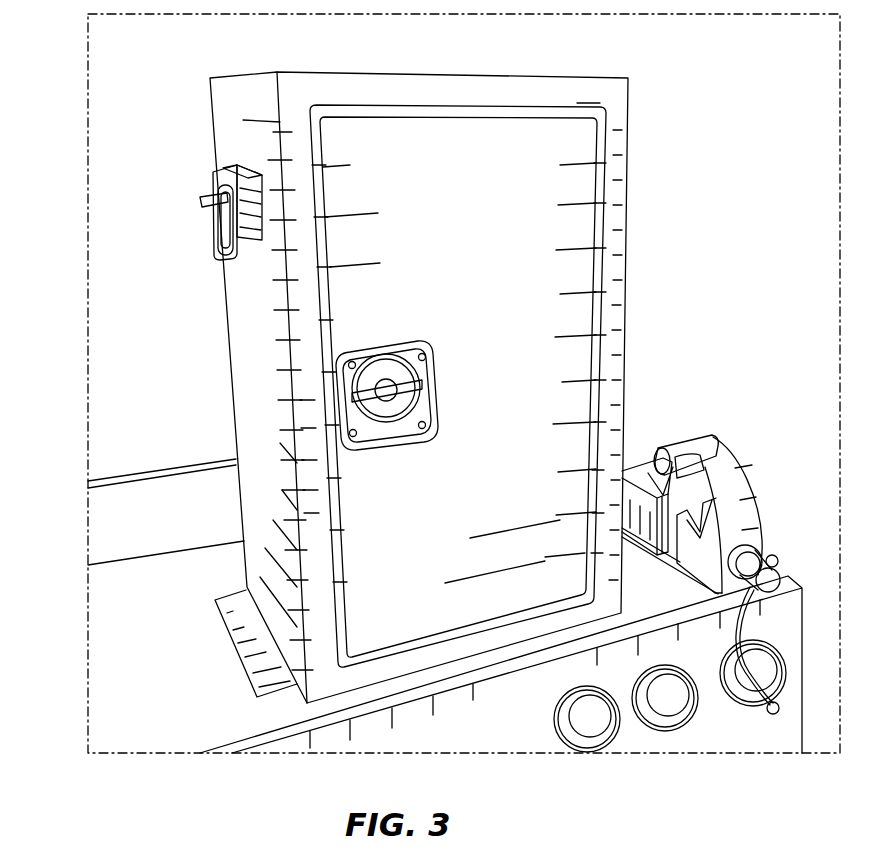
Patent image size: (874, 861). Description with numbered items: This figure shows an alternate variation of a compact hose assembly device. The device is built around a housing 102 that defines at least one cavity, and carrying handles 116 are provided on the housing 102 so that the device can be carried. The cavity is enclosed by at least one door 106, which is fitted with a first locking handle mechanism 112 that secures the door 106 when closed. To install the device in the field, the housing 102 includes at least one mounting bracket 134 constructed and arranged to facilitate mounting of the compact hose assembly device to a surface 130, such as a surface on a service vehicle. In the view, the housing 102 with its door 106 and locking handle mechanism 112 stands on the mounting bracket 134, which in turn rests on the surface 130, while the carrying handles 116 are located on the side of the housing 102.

The housing 102 is at (617, 190).
The door 106 is at (560, 356).
The first locking handle mechanism 112 is at (378, 400).
The carrying handles 116 is at (213, 226).
The surface 130 is at (122, 713).
The mounting bracket 134 is at (224, 601).